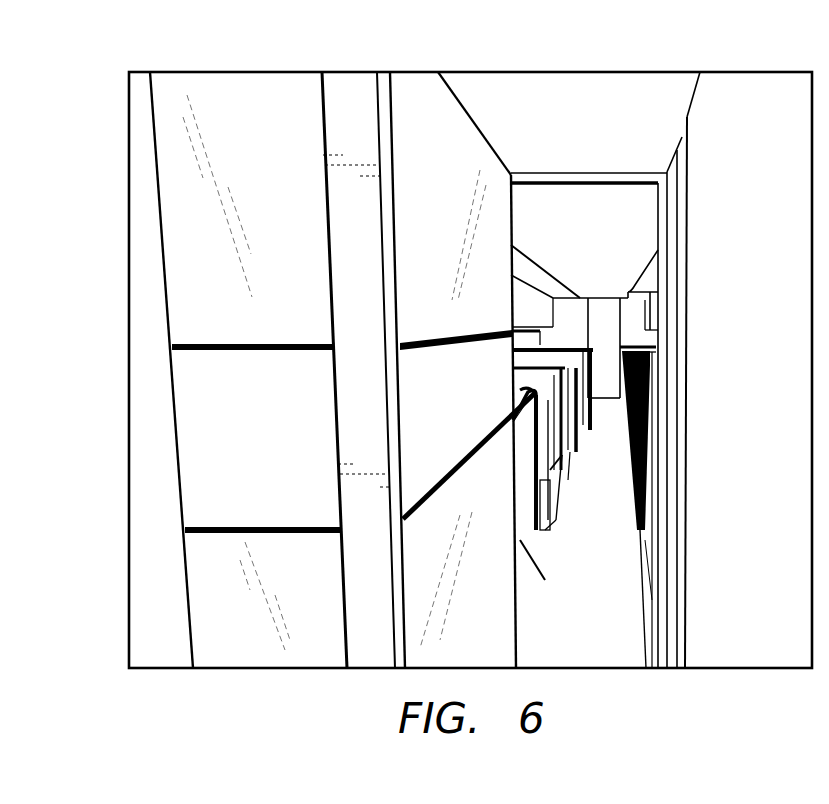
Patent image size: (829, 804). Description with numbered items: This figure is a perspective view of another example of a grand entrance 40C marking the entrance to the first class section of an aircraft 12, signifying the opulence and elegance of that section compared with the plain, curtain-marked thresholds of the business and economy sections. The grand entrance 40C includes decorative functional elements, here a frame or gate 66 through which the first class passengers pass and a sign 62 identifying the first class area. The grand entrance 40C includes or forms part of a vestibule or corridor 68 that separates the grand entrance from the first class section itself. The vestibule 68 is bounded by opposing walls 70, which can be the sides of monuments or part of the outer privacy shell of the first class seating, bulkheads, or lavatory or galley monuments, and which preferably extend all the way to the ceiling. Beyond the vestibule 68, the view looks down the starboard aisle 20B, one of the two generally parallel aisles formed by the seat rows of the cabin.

The grand entrance 40C is at (113, 344).
The frame or gate 66 is at (272, 159).
The sign 62 is at (210, 424).
The opposing wall 70 is at (446, 231).
The vestibule or corridor 68 is at (635, 148).
The aircraft 12 is at (604, 246).
The starboard aisle 20B is at (620, 546).